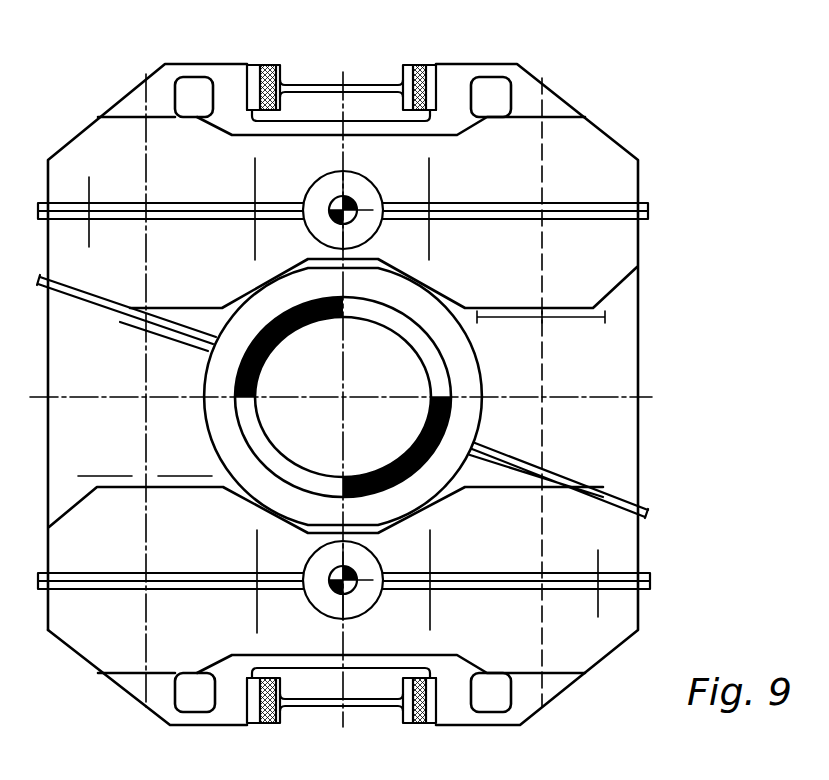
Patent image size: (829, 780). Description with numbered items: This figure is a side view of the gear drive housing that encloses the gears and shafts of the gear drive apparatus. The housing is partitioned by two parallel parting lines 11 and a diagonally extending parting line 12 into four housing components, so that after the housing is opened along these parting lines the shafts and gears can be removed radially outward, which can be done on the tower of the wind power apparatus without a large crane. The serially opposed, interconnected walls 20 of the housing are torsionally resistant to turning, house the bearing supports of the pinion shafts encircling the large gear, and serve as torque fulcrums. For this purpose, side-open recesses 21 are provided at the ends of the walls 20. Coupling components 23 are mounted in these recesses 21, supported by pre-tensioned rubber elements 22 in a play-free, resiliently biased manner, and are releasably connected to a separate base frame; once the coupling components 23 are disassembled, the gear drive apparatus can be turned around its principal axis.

The parallel parting lines 11 is at (650, 575).
The diagonally extending parting line 12 is at (612, 497).
The gear housing walls 20 is at (623, 362).
The recesses 21 is at (385, 683).
The pre-tensioned rubber elements 22 is at (417, 65).
The coupling components 23 is at (357, 90).